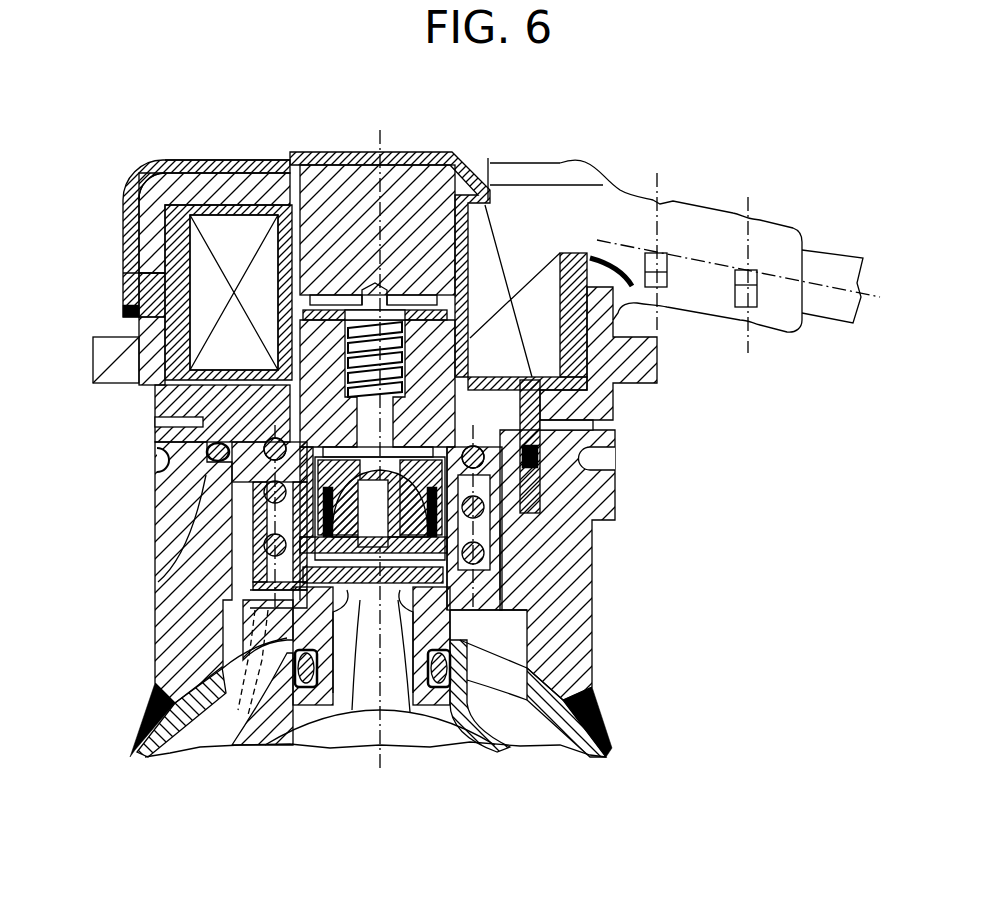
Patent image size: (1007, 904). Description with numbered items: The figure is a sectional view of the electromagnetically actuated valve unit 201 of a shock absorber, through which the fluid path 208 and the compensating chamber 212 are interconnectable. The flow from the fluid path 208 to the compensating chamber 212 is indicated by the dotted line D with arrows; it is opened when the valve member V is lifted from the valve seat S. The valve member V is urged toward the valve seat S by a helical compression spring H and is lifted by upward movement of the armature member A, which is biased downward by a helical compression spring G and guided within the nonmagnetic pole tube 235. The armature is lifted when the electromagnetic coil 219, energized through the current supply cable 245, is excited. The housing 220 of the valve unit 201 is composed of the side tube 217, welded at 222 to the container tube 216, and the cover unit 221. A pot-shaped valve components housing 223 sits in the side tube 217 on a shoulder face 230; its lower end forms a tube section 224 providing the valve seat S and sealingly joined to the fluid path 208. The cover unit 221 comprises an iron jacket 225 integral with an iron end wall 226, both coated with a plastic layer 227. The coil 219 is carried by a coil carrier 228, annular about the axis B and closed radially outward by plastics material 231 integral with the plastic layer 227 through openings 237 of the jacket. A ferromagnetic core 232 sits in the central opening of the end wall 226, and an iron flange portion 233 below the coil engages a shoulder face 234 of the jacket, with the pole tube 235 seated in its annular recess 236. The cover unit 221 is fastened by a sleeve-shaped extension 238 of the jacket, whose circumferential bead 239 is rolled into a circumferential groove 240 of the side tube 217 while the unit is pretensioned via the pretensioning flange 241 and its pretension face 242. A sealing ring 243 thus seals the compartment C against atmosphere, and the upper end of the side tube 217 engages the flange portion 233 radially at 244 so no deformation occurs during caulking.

The valve unit 201 is at (710, 185).
The fluid path 208 is at (335, 740).
The compensating chamber 212 is at (540, 730).
The container tube 216 is at (615, 745).
The side tube 217 is at (572, 616).
The electromagnetic coil 219 is at (278, 158).
The housing 220 is at (645, 491).
The cover unit 221 is at (258, 148).
The weld 222 is at (605, 715).
The valve components housing 223 is at (160, 540).
The tube section 224 is at (423, 610).
The iron jacket 225 is at (125, 265).
The iron end wall 226 is at (175, 157).
The plastic layer 227 is at (137, 245).
The coil carrier 228 is at (228, 160).
The shoulder face 230 is at (157, 580).
The plastics material 231 is at (125, 287).
The ferromagnetic core 232 is at (410, 185).
The iron flange portion 233 is at (155, 458).
The shoulder face 234 is at (138, 430).
The pole tube 235 is at (250, 295).
The annular recess 236 is at (487, 340).
The openings 237 is at (135, 192).
The sleeve-shaped extension 238 is at (610, 408).
The circumferential bead 239 is at (608, 457).
The circumferential groove 240 is at (155, 493).
The pretensioning flange 241 is at (100, 383).
The pretension face 242 is at (108, 335).
The sealing ring 243 is at (223, 410).
The radial engagement 244 is at (537, 378).
The current supply cable 245 is at (830, 262).
The armature member A is at (508, 163).
The axis B is at (380, 132).
The compartment C is at (225, 638).
The flow path D is at (257, 727).
The helical compression spring G is at (462, 160).
The helical compression spring H is at (527, 537).
The valve seat S is at (527, 600).
The valve member V is at (372, 650).